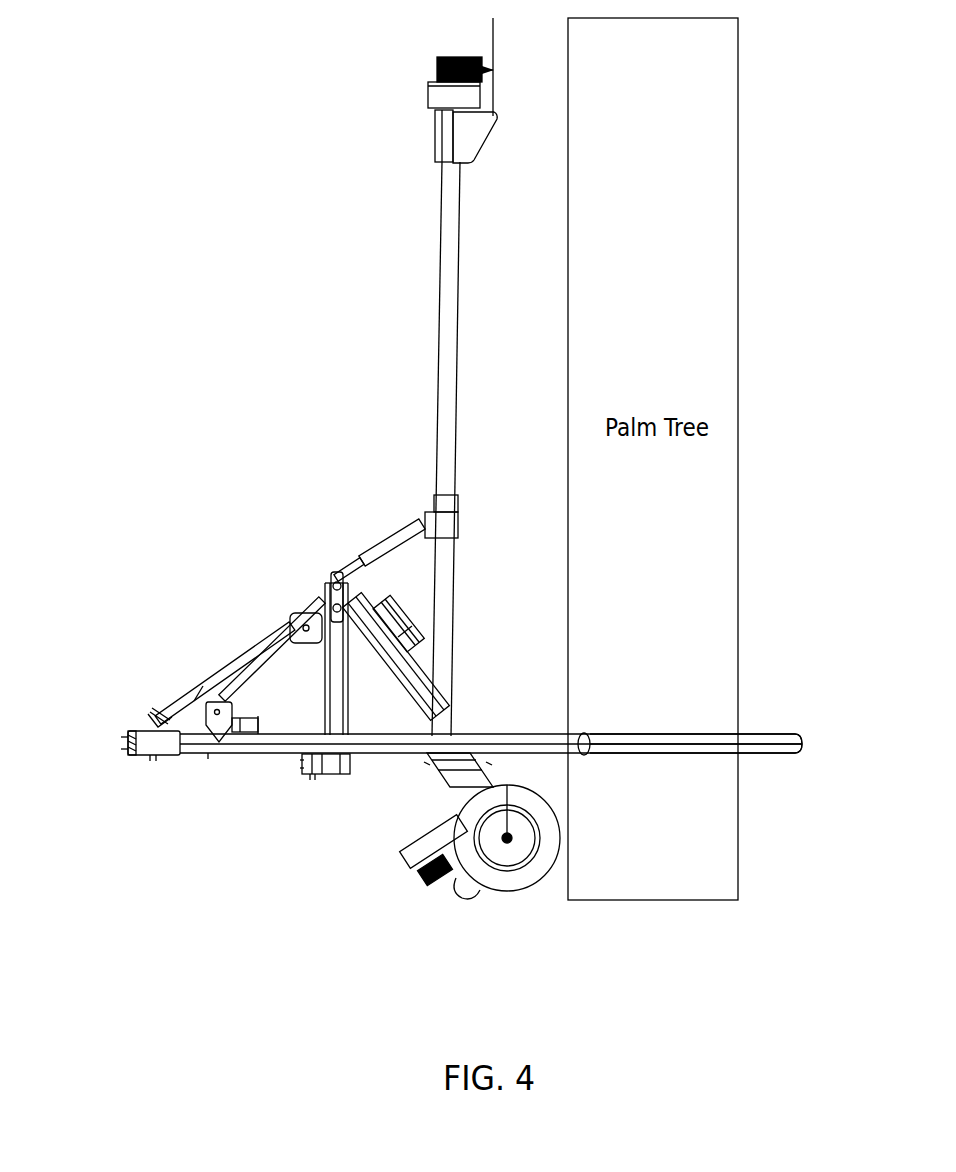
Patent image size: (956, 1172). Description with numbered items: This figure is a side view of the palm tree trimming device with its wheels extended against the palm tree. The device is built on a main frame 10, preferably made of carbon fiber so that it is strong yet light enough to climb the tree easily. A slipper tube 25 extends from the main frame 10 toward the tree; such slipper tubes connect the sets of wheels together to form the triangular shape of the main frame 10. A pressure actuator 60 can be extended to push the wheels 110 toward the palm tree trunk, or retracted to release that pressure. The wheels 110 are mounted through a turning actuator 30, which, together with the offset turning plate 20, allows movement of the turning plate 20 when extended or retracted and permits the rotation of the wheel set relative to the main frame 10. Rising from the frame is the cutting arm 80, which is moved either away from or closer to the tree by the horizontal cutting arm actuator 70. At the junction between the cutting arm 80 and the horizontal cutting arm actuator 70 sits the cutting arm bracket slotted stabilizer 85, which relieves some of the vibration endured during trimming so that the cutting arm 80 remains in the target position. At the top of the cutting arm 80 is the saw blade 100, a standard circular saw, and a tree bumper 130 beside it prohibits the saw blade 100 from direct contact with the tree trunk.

The main frame 10 is at (513, 727).
The turning plate 20 is at (463, 710).
The slipper tubes 25 is at (778, 735).
The turning actuator 30 is at (447, 777).
The pressure actuator 60 is at (313, 725).
The horizontal cutting arm actuator 70 is at (265, 633).
The cutting arm 80 is at (440, 280).
The cutting arm bracket slotted stabilizer 85 is at (432, 508).
The saw blade 100 is at (493, 40).
The wheels 110 is at (505, 898).
The tree bumper 130 is at (470, 133).